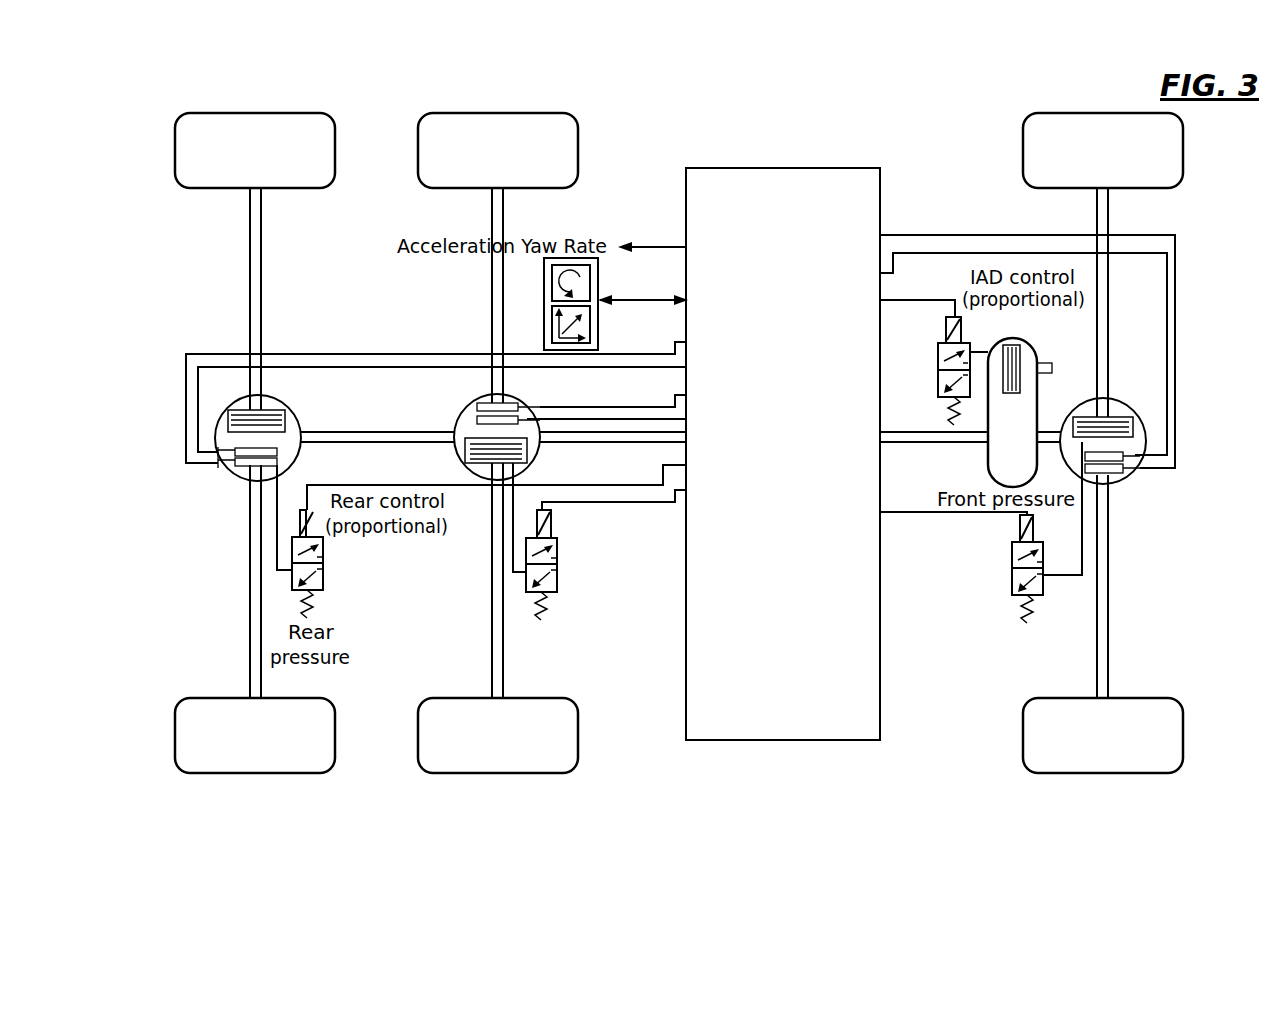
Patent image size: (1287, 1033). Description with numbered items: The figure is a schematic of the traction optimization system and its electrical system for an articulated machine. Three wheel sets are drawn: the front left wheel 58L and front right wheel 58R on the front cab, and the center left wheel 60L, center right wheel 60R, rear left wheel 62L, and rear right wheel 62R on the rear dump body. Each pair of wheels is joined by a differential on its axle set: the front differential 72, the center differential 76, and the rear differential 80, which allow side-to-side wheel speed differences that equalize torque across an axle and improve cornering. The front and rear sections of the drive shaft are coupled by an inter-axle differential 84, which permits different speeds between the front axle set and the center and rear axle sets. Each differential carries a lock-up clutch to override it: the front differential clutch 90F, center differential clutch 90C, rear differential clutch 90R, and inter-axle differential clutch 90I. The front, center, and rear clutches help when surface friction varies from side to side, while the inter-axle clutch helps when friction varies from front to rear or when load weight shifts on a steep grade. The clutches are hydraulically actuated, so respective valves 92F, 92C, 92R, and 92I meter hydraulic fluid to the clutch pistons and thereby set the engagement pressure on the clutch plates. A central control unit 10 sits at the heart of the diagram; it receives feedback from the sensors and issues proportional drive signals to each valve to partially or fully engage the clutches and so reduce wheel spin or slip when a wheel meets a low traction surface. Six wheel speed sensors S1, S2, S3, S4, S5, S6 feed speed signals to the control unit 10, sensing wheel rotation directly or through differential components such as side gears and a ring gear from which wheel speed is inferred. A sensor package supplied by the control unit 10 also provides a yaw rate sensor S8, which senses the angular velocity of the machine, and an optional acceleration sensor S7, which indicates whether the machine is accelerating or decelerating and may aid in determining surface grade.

The central control unit 10 is at (742, 723).
The front left wheel 58L is at (1078, 130).
The front right wheel 58R is at (1053, 745).
The center left wheel 60L is at (532, 146).
The center right wheel 60R is at (560, 736).
The rear left wheel 62L is at (255, 140).
The rear right wheel 62R is at (305, 736).
The front differential 72 is at (1120, 484).
The center differential 76 is at (458, 432).
The rear differential 80 is at (230, 483).
The inter-axle differential 84 is at (1030, 341).
The rear differential clutch 90R is at (270, 412).
The center differential clutch 90C is at (484, 486).
The front differential clutch 90F is at (1086, 419).
The inter-axle differential clutch 90I is at (1018, 366).
The rear differential clutch valve 92R is at (323, 563).
The center differential clutch valve 92C is at (557, 566).
The front differential clutch valve 92F is at (1012, 590).
The inter-axle differential clutch valve 92I is at (940, 345).
The wheel speed sensor S1 is at (1136, 470).
The wheel speed sensor S2 is at (1141, 457).
The wheel speed sensor S3 is at (527, 441).
The wheel speed sensor S4 is at (528, 410).
The wheel speed sensor S5 is at (218, 472).
The wheel speed sensor S6 is at (226, 430).
The acceleration sensor S7 is at (545, 326).
The yaw rate sensor S8 is at (545, 276).